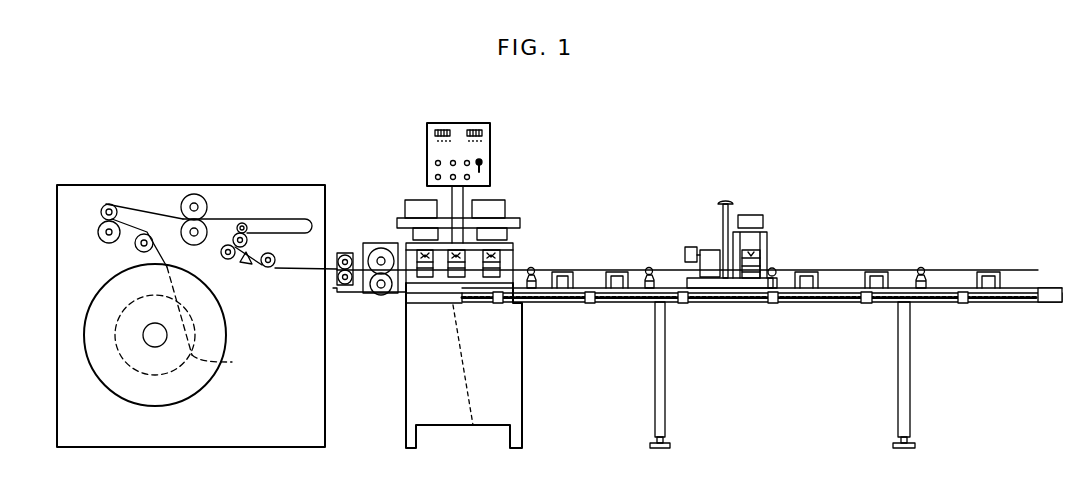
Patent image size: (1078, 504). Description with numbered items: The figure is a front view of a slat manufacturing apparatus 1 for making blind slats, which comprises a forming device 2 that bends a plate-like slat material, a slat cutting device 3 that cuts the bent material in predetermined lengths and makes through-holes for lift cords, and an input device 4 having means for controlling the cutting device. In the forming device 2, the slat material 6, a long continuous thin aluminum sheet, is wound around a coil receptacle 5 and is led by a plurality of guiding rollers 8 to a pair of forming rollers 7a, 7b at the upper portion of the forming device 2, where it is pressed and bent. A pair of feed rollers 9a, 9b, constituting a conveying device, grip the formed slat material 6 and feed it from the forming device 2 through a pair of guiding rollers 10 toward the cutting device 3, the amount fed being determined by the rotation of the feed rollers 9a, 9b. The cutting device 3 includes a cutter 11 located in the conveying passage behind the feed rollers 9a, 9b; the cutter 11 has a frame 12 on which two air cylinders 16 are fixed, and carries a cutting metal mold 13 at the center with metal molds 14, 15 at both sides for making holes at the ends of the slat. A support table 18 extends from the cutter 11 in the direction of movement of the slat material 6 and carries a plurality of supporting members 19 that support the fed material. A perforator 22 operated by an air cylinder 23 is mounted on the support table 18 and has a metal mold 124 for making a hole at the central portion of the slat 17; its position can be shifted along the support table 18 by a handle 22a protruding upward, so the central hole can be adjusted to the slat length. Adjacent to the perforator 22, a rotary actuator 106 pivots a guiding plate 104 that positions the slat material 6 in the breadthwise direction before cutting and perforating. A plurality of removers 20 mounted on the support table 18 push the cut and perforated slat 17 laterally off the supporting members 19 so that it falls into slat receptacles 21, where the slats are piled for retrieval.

The slat manufacturing apparatus 1 is at (585, 118).
The forming device 2 is at (120, 185).
The slat cutting device 3 is at (523, 362).
The input device 4 is at (426, 137).
The coil receptacle 5 is at (227, 334).
The slat material 6 is at (182, 321).
The forming roller 7a is at (192, 194).
The forming roller 7b is at (194, 246).
The guiding roller 8 is at (104, 205).
The feed roller 9a is at (380, 247).
The feed roller 9b is at (381, 296).
The guiding roller 10 is at (344, 254).
The cutter 11 is at (521, 222).
The frame 12 is at (514, 250).
The cutting metal mold 13 is at (452, 280).
The metal mold 14 is at (420, 280).
The metal mold 15 is at (487, 280).
The air cylinder 16 is at (410, 200).
The slat 17 is at (816, 303).
The support table 18 is at (1050, 288).
The supporting member 19 is at (573, 271).
The remover 20 is at (538, 262).
The slat receptacle 21 is at (498, 304).
The perforator 22 is at (768, 230).
The handle 22a is at (727, 200).
The air cylinder 23 is at (750, 214).
The guiding plate 104 is at (711, 250).
The rotary actuator 106 is at (688, 247).
The metal mold 124 is at (763, 262).